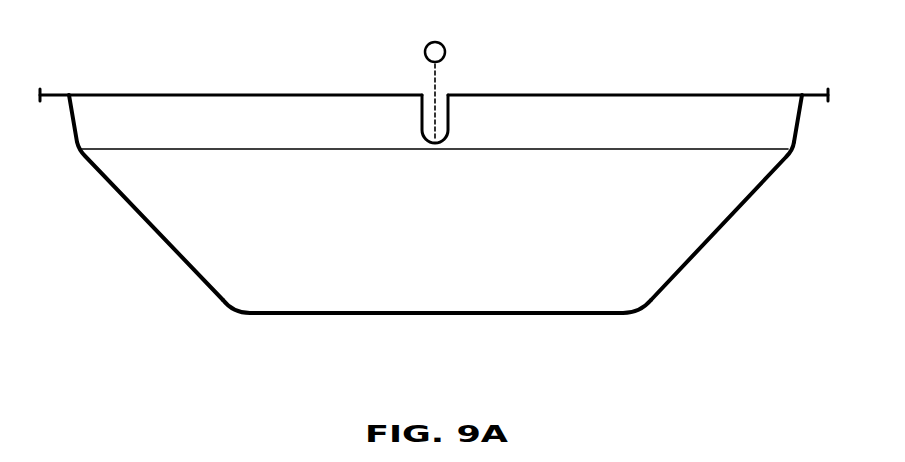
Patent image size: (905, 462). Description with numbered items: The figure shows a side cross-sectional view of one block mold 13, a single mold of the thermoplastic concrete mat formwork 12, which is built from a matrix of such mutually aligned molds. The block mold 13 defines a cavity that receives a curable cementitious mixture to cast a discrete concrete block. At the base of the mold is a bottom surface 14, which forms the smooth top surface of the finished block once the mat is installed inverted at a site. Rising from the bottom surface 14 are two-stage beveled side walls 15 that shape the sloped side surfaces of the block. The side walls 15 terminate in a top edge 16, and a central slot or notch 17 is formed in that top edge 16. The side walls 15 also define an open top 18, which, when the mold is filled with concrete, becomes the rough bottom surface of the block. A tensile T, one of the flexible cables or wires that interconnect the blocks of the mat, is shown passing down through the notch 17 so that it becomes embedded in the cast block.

The concrete mat formwork 12 is at (812, 93).
The block mold 13 is at (710, 240).
The bottom surface 14 is at (523, 313).
The two-stage beveled side walls 15 is at (173, 248).
The top edge 16 is at (635, 93).
The central slot or notch 17 is at (449, 119).
The open top 18 is at (184, 90).
The tensile T is at (446, 48).